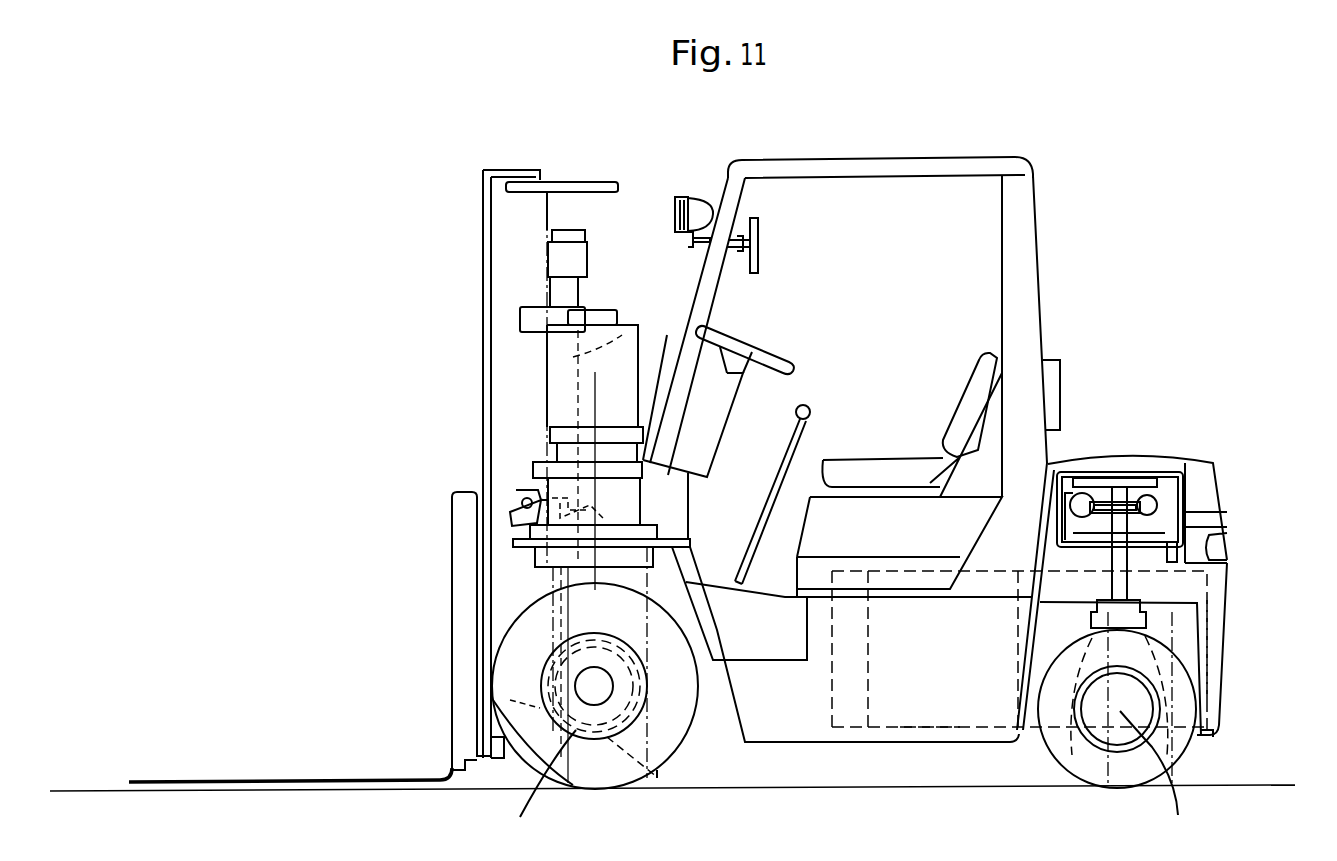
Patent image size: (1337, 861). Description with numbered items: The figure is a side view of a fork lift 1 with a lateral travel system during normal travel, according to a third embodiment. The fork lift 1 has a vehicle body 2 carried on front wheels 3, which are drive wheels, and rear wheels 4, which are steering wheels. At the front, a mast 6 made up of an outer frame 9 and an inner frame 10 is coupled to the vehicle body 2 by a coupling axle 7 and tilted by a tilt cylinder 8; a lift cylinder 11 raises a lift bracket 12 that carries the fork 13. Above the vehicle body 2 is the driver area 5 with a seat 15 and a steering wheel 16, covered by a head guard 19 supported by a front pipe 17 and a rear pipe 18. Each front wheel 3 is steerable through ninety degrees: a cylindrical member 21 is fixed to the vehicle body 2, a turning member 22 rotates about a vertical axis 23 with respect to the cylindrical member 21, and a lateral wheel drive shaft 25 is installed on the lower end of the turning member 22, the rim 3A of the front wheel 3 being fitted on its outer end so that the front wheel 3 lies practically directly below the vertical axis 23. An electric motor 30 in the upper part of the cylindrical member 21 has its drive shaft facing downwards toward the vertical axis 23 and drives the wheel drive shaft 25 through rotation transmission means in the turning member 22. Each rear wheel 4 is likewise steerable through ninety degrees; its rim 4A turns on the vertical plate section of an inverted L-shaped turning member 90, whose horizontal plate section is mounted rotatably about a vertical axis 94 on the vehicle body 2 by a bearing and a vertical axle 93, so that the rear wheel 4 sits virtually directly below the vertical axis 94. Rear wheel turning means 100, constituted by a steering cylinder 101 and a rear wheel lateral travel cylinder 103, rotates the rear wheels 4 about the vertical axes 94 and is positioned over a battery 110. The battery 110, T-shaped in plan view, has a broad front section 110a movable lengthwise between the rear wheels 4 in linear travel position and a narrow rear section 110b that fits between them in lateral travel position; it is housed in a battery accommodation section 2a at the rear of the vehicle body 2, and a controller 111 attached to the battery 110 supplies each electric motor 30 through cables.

The fork lift 1 is at (1106, 358).
The vehicle body 2 is at (760, 740).
The battery accommodation section 2a is at (1220, 675).
The front wheels 3 is at (597, 779).
The rims 3A is at (534, 774).
The rear wheels 4 is at (1120, 778).
The rims 4A is at (1159, 779).
The driver area 5 is at (838, 228).
The mast 6 is at (483, 325).
The coupling axle 7 is at (510, 700).
The tilt cylinder 8 is at (675, 456).
The outer frame 9 is at (500, 412).
The inner frame 10 is at (483, 450).
The lift cylinder 11 is at (632, 324).
The lift bracket 12 is at (458, 594).
The fork 13 is at (343, 778).
The seat 15 is at (921, 467).
The steering wheel 16 is at (773, 354).
The front pipe 17 is at (698, 292).
The rear pipe 18 is at (1006, 288).
The head guard 19 is at (922, 164).
The cylindrical member 21 is at (540, 486).
The turning member 22 is at (530, 548).
The vertical axis 23 is at (720, 411).
The wheel drive shaft 25 is at (657, 776).
The electric motor 30 is at (565, 386).
The turning member 90 is at (1140, 614).
The vertical axle 93 is at (1147, 527).
The vertical axis 94 is at (1137, 583).
The rear wheel turning means 100 is at (1163, 504).
The steering cylinder 101 is at (1054, 471).
The rear wheel lateral travel cylinder 103 is at (1181, 470).
The battery 110 is at (975, 740).
The front section 110a is at (925, 745).
The rear section 110b is at (1212, 644).
The controller 111 is at (845, 745).